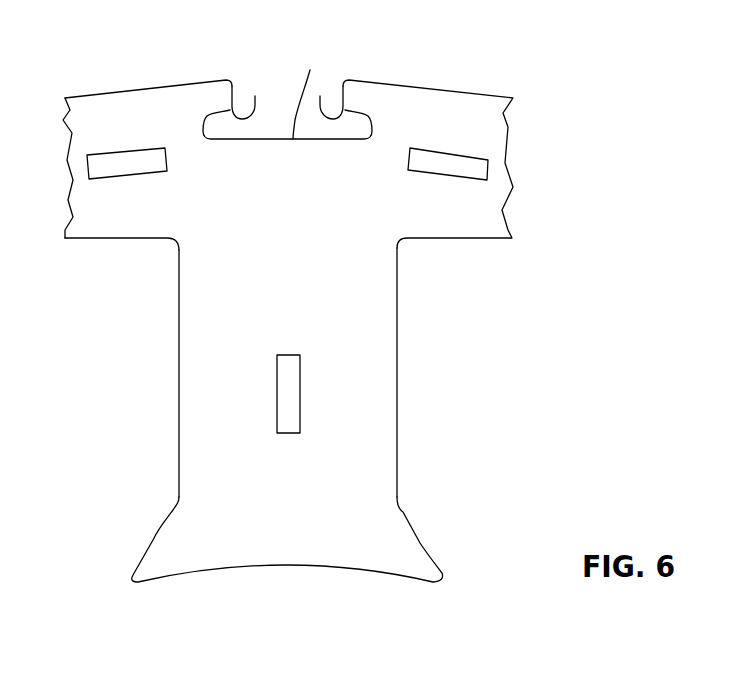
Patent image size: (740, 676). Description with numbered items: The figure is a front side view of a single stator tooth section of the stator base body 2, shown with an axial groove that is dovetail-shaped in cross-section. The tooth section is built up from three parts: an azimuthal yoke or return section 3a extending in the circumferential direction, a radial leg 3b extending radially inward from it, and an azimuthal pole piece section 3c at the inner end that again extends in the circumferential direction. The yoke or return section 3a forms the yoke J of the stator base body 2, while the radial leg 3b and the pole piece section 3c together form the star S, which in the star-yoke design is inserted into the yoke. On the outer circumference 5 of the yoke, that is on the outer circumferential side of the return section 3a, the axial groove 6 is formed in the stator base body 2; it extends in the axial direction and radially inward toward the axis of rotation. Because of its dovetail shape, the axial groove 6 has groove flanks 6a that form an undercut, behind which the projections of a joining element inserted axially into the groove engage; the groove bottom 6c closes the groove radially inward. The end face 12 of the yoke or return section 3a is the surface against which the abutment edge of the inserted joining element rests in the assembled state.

The stator base body 2 is at (500, 289).
The yoke or return section 3a is at (480, 107).
The radial leg 3b is at (375, 384).
The pole piece section 3c is at (408, 554).
The outer circumference 5 is at (118, 92).
The axial groove 6 is at (284, 111).
The groove flanks 6a is at (255, 96).
The groove bottom 6c is at (310, 70).
The end face 12 is at (128, 226).